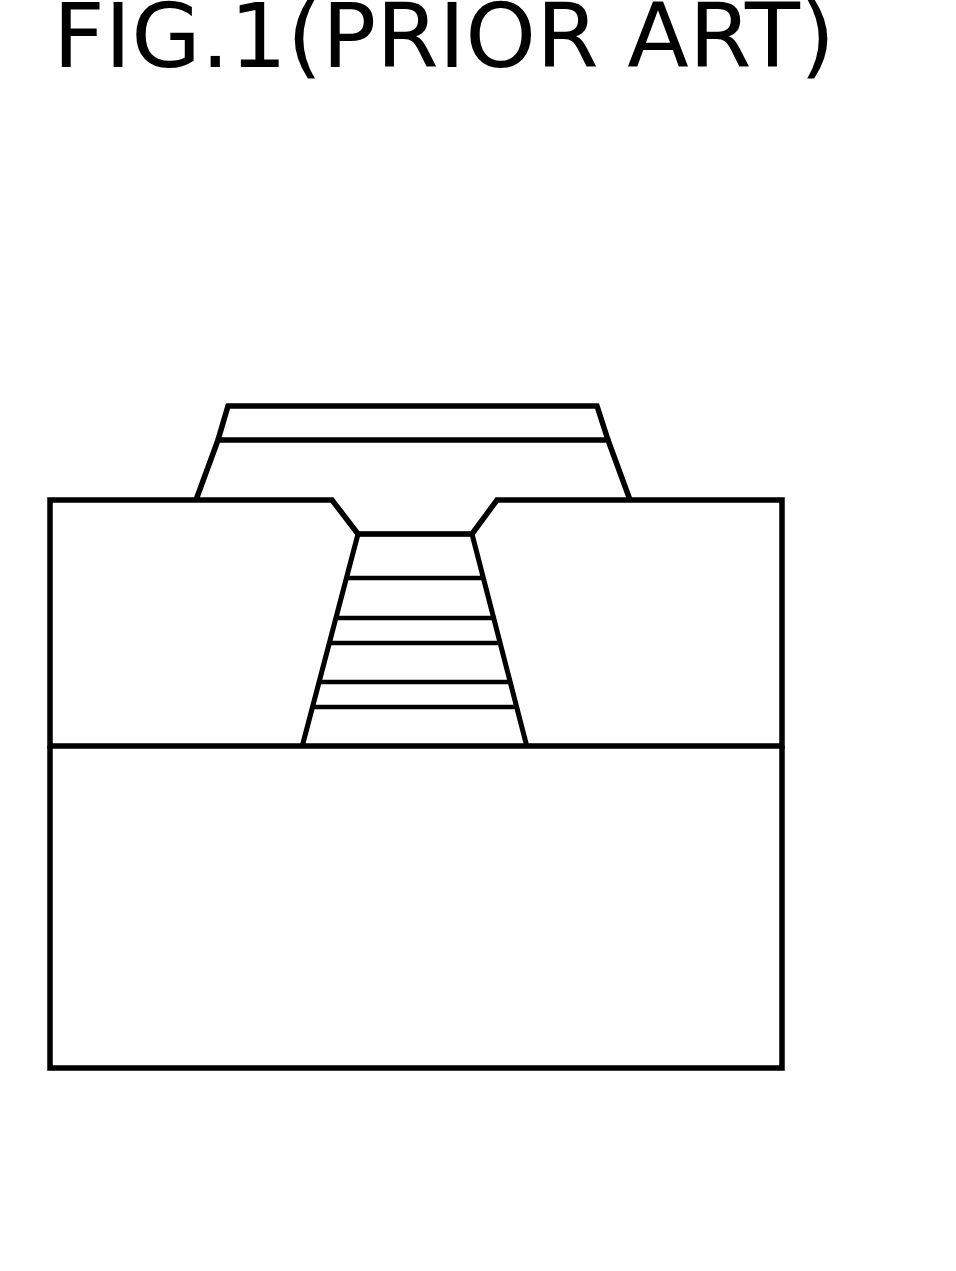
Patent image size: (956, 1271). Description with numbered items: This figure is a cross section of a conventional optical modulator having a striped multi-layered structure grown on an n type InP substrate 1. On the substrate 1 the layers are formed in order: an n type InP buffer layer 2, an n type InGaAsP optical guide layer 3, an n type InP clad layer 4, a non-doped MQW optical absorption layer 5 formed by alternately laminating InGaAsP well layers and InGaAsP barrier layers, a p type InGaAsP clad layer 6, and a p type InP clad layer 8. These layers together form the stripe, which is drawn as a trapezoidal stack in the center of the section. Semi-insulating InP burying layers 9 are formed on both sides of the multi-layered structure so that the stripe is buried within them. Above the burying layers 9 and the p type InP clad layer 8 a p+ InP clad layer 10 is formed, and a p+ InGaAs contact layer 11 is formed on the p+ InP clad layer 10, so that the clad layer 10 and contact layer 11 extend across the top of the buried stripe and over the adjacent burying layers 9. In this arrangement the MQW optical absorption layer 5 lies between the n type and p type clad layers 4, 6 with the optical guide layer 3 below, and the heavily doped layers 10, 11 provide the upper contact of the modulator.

The semi-insulating substrate 1 is at (765, 912).
The n type InP buffer layer 2 is at (510, 730).
The n type InGaAsP optical guide layer 3 is at (503, 693).
The n type InP clad layer 4 is at (492, 665).
The non-doped MQW optical absorption layer 5 is at (492, 628).
The p type InGaAsP clad layer 6 is at (470, 600).
The p type InP clad layer 8 is at (463, 553).
The semi-insulating InP burying layer 9 is at (107, 513).
The p+ InP clad layer 10 is at (603, 458).
The p+ InGaAs contact layer 11 is at (420, 417).